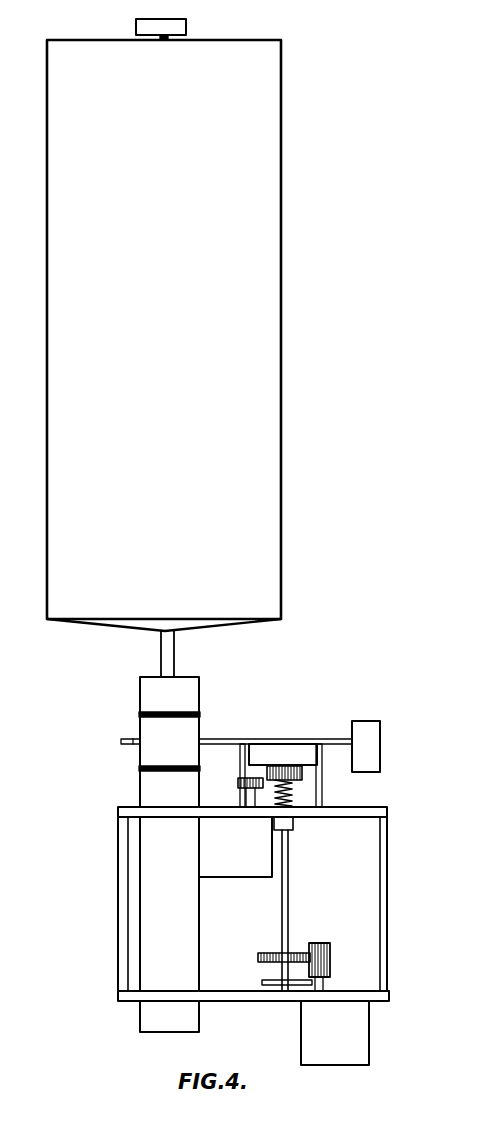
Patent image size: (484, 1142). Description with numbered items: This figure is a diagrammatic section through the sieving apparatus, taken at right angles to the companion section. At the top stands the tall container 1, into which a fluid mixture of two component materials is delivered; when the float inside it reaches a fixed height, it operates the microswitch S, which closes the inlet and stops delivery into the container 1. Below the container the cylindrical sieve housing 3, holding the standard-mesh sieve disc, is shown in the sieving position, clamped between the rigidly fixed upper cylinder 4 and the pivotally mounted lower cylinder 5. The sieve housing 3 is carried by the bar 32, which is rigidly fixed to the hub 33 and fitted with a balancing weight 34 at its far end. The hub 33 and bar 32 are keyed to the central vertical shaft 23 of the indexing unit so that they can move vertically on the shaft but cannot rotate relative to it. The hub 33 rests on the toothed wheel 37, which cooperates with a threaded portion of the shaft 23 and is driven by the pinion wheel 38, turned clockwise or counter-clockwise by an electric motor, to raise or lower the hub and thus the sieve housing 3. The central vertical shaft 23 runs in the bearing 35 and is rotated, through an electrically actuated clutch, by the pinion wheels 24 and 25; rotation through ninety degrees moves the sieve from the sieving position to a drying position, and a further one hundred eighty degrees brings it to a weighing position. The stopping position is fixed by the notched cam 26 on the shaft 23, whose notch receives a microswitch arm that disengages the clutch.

The container 1 is at (282, 236).
The microswitch S is at (182, 37).
The sieve housing 3 is at (153, 722).
The upper cylinder 4 is at (190, 690).
The lower cylinder 5 is at (148, 778).
The central vertical shaft 23 is at (287, 906).
The pinion wheel 24 is at (333, 960).
The pinion wheel 25 is at (262, 955).
The notched cam 26 is at (268, 983).
The bar 32 is at (297, 739).
The hub 33 is at (263, 749).
The balancing weight 34 is at (372, 749).
The bearing 35 is at (293, 823).
The toothed wheel 37 is at (300, 773).
The pinion wheel 38 is at (238, 782).